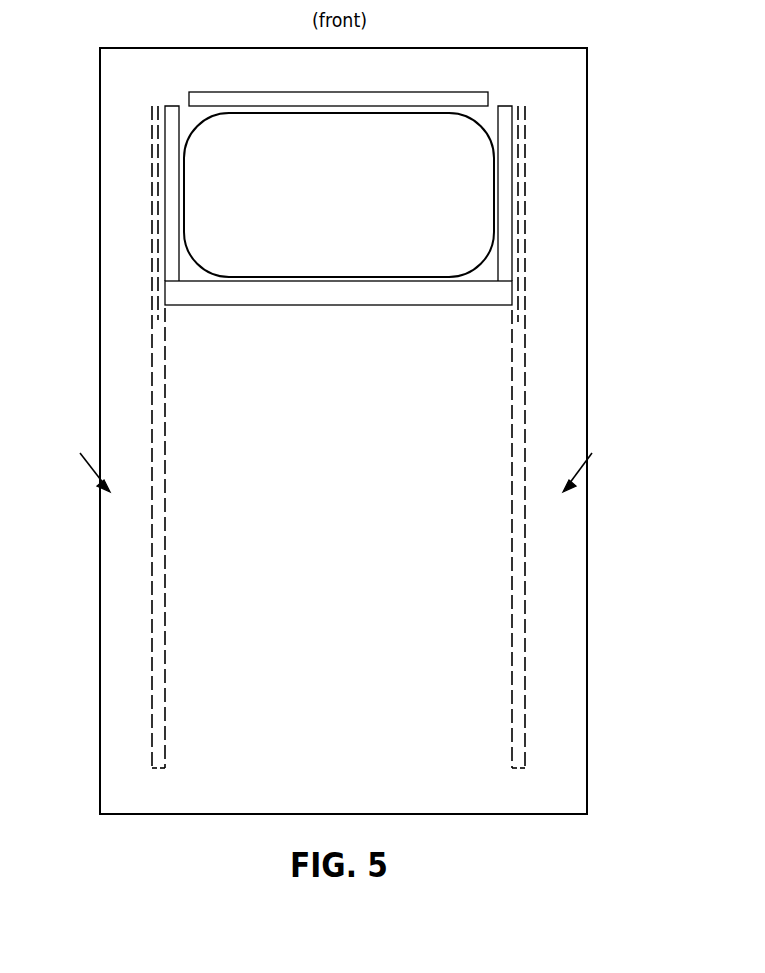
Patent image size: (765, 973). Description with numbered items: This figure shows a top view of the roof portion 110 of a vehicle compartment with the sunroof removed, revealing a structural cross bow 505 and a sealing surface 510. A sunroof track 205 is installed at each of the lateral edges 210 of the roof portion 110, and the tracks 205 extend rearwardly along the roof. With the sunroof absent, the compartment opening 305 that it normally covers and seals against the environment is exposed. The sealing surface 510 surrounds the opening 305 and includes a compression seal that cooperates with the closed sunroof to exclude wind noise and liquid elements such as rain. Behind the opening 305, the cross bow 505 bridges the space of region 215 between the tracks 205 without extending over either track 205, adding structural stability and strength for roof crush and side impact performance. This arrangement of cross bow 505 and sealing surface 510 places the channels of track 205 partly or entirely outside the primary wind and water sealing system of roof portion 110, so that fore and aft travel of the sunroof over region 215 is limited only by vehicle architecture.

The roof portion 110 is at (115, 100).
The sealing surface 510 is at (432, 92).
The structural cross bow 505 is at (189, 293).
The compartment opening 305 is at (357, 204).
The sunroof track 205 is at (165, 417).
The region 215 is at (356, 429).
The lateral edges 210 is at (336, 467).